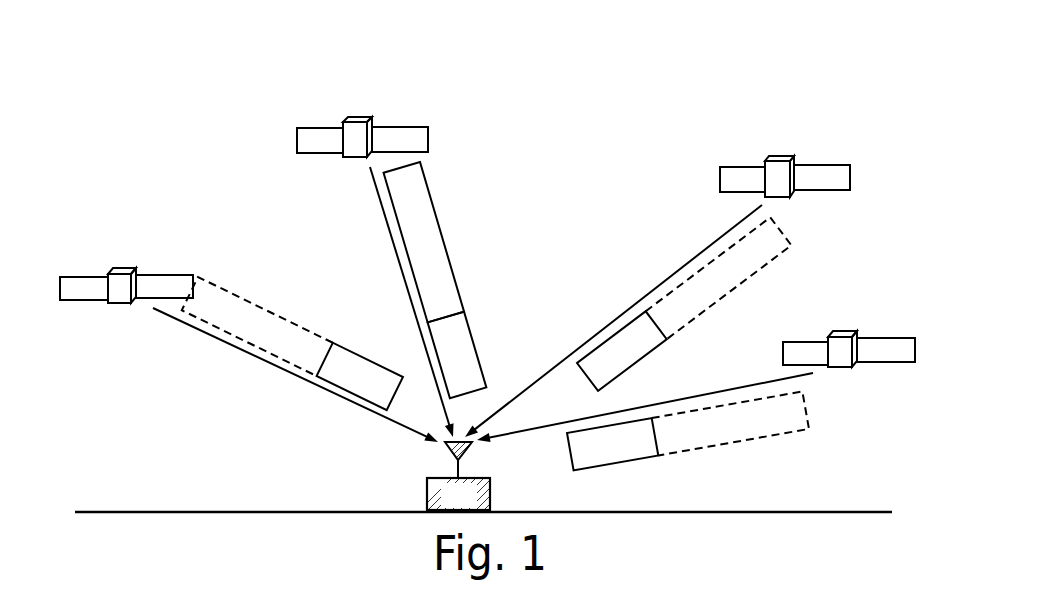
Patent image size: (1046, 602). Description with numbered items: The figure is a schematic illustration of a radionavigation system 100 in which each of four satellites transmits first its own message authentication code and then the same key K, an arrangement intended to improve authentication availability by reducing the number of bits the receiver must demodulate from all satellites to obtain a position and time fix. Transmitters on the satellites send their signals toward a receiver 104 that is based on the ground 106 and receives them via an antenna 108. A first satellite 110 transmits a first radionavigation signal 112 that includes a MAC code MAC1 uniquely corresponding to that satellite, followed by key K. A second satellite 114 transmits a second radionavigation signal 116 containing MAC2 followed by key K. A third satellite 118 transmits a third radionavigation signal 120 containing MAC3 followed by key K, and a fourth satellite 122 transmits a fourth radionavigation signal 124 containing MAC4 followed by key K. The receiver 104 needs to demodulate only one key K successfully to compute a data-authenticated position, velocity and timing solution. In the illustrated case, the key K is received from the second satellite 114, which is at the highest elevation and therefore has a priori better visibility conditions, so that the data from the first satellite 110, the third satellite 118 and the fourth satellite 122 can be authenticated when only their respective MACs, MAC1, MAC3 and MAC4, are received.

The radionavigation system 100 is at (749, 57).
The receiver 104 is at (427, 497).
The ground 106 is at (145, 510).
The antenna 108 is at (470, 452).
The first satellite 110 is at (117, 268).
The first radionavigation signal 112 is at (296, 325).
The second satellite 114 is at (360, 117).
The second radionavigation signal 116 is at (448, 248).
The third satellite 118 is at (786, 156).
The third radionavigation signal 120 is at (727, 297).
The fourth satellite 122 is at (843, 331).
The fourth radionavigation signal 124 is at (809, 407).